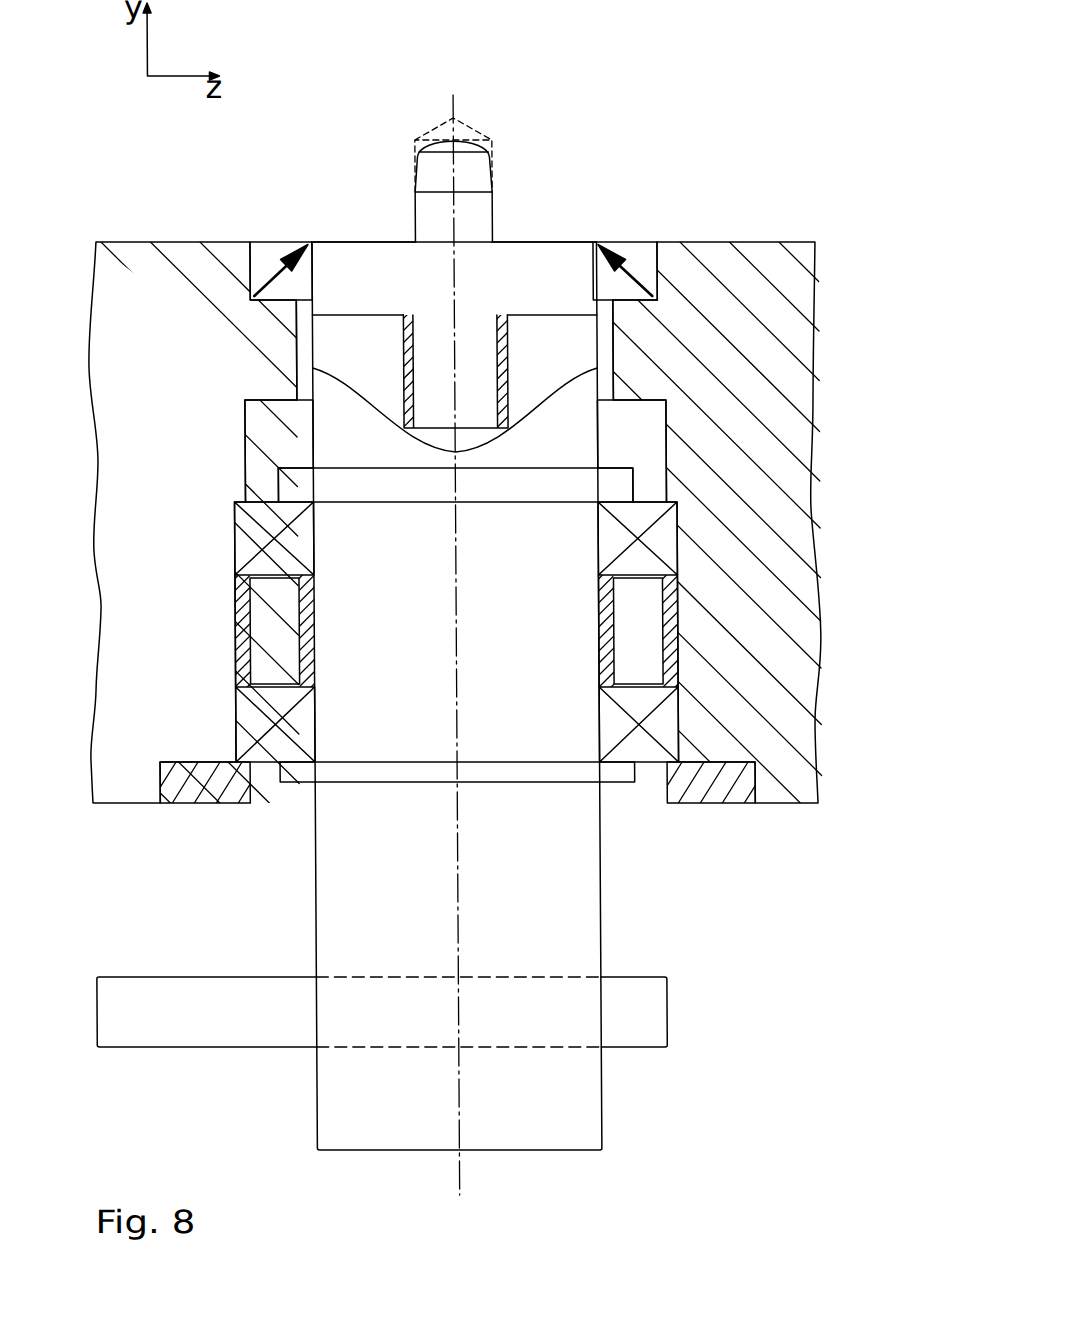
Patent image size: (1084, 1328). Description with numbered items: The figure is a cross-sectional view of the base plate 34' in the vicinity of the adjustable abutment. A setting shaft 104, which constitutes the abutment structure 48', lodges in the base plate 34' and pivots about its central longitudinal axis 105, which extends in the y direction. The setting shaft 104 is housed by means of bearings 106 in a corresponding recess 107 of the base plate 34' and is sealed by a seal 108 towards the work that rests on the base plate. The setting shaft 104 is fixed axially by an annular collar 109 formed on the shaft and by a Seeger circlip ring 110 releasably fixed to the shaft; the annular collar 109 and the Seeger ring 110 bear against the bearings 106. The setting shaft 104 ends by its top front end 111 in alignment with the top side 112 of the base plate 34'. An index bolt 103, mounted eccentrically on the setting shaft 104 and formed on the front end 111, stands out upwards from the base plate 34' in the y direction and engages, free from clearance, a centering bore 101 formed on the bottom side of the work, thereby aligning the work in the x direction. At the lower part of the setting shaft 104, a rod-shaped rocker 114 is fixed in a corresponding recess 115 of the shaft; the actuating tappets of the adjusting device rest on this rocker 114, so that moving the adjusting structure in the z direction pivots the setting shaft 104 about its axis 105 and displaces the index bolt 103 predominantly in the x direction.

The centering bore 101 is at (492, 152).
The index bolt 103 is at (479, 206).
The setting shaft 104 is at (587, 860).
The central longitudinal axis 105 is at (455, 822).
The bearings 106 is at (666, 541).
The recess 107 is at (650, 441).
The seal 108 is at (636, 253).
The annular collar 109 is at (626, 487).
The Seeger circlip ring 110 is at (660, 768).
The top front end 111 is at (570, 241).
The top side 112 is at (190, 242).
The rocker 114 is at (651, 1005).
The recess 115 is at (567, 976).
The base plate 34' is at (763, 522).
The abutment structure 48' is at (361, 178).